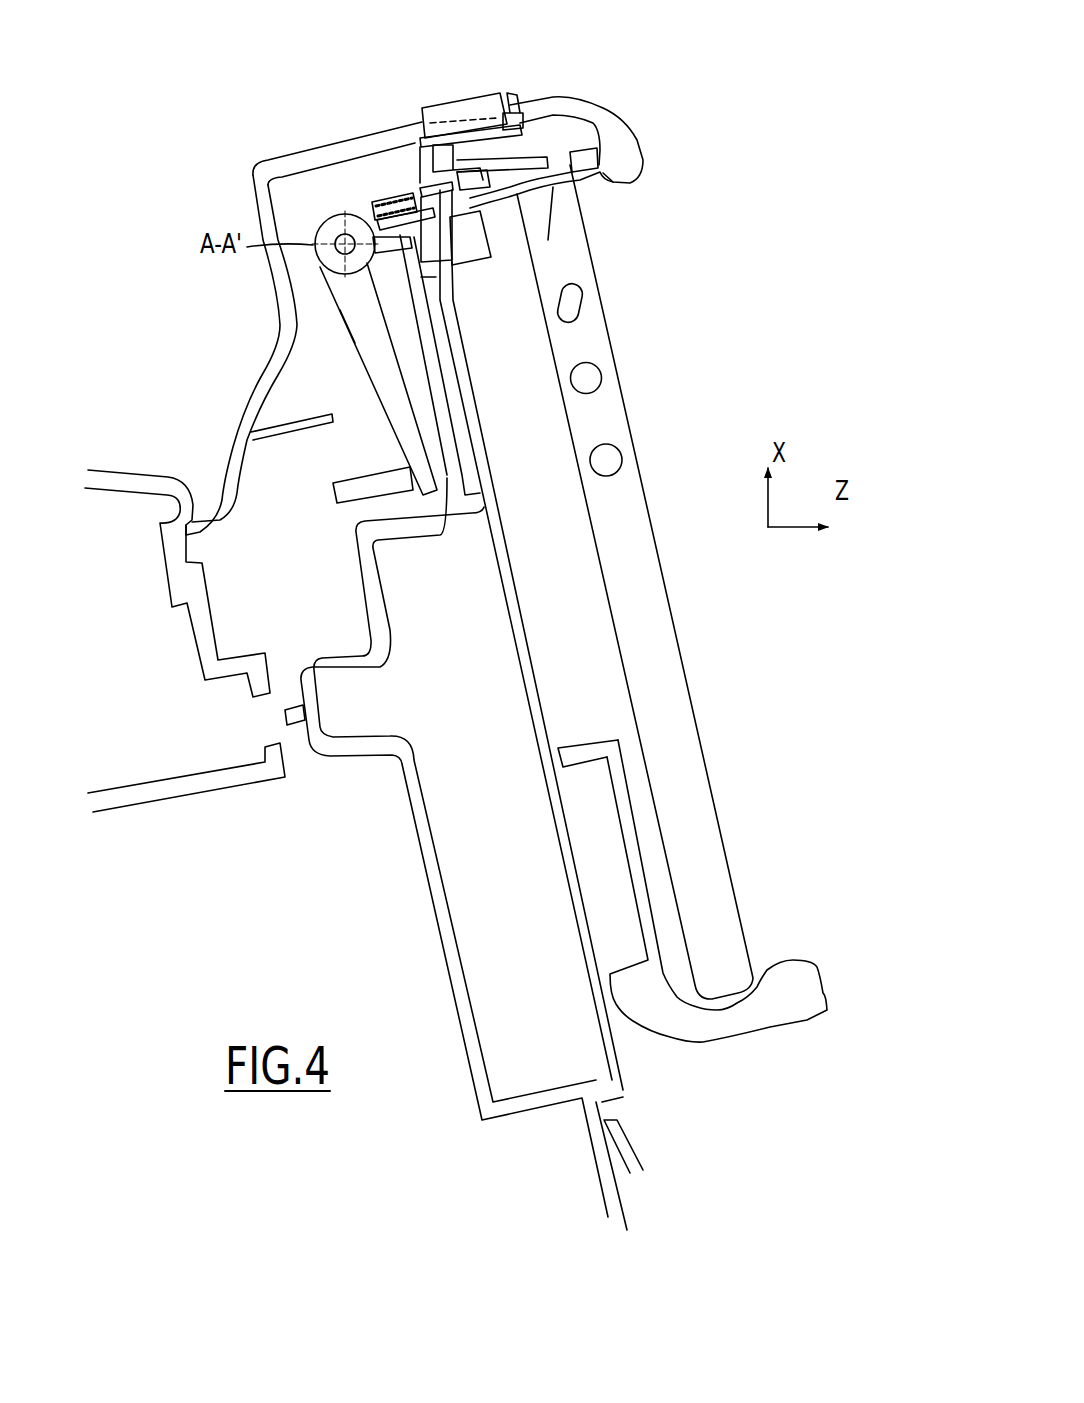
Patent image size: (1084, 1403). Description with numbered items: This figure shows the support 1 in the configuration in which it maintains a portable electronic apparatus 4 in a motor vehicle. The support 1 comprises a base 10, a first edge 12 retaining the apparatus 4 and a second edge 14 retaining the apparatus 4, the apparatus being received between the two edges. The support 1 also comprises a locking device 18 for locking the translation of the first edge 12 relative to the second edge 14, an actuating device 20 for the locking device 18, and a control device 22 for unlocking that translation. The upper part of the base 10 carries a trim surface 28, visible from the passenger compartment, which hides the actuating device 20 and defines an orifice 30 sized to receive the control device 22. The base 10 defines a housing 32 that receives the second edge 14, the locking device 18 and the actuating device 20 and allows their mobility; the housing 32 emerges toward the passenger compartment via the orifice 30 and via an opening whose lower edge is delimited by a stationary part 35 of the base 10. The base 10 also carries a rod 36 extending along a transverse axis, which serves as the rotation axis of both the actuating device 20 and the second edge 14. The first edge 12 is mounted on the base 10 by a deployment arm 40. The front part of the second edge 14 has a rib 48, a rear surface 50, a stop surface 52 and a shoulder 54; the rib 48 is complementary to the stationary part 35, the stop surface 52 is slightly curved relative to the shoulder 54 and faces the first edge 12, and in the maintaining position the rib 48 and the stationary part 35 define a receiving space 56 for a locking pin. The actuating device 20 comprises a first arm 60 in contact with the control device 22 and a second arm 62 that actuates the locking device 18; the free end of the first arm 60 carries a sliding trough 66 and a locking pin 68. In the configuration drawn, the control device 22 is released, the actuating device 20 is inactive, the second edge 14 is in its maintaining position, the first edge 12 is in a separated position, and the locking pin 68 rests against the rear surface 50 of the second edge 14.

The support 1 is at (247, 82).
The portable electronic apparatus 4 is at (652, 597).
The base 10 is at (212, 402).
The first edge 12 is at (706, 1040).
The second edge 14 is at (583, 166).
The locking device 18 is at (330, 493).
The actuating device 20 is at (340, 303).
The control device 22 is at (462, 91).
The trim surface 28 is at (540, 99).
The orifice 30 is at (512, 90).
The housing 32 is at (330, 208).
The stationary part 35 is at (466, 243).
The rod 36 is at (336, 235).
The deployment arm 40 is at (620, 830).
The rib 48 is at (498, 210).
The rear surface 50 is at (478, 175).
The stop surface 52 is at (577, 150).
The shoulder 54 is at (608, 194).
The receiving space 56 is at (491, 198).
The first arm 60 is at (358, 191).
The second arm 62 is at (367, 328).
The sliding trough 66 is at (379, 191).
The locking pin 68 is at (417, 185).